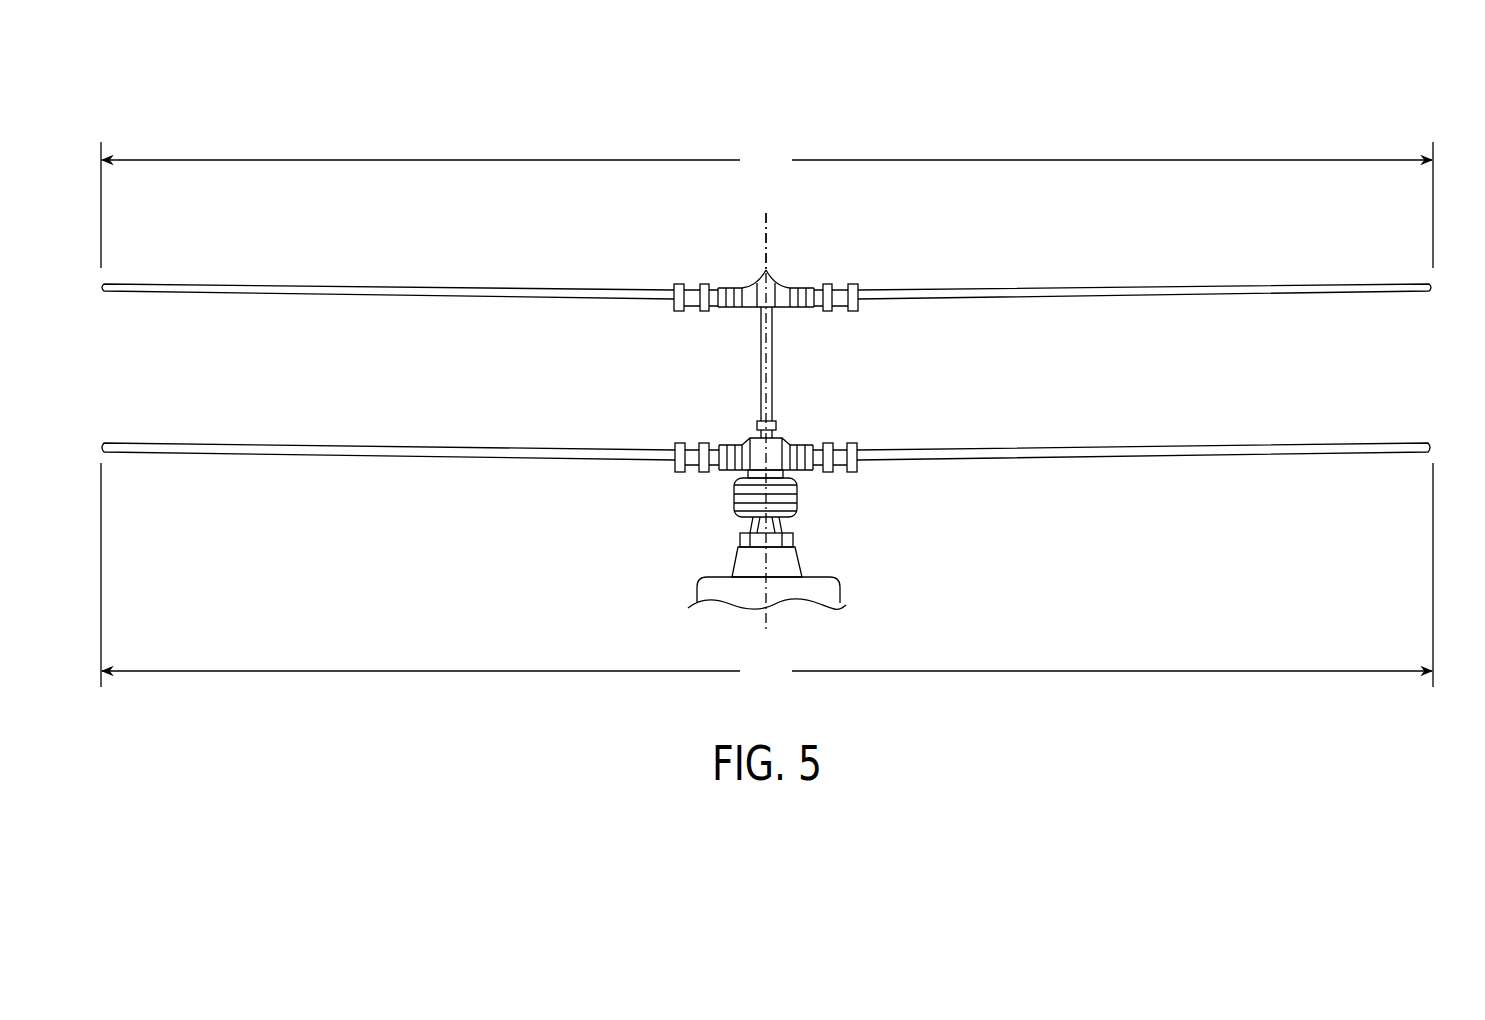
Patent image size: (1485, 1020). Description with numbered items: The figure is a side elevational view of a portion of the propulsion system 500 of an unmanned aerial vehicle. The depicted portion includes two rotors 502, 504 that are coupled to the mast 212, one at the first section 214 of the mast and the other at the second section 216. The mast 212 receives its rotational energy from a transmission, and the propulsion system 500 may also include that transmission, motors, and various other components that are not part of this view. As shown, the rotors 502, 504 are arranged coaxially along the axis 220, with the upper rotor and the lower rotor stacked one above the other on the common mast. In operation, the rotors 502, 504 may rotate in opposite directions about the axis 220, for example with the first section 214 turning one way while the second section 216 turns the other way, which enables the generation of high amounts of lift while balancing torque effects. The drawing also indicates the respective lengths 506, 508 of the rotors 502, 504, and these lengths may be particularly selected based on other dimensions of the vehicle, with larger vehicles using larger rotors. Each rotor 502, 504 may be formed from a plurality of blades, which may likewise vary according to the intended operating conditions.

The propulsion system 500 is at (1322, 130).
The rotor 502 is at (1325, 436).
The rotor 504 is at (1358, 302).
The length of rotor 506 is at (767, 575).
The upper rotor diameter 508 is at (767, 205).
The mast 212 is at (710, 499).
The first section 214 is at (783, 473).
The second section 216 is at (772, 325).
The axis 220 is at (768, 244).